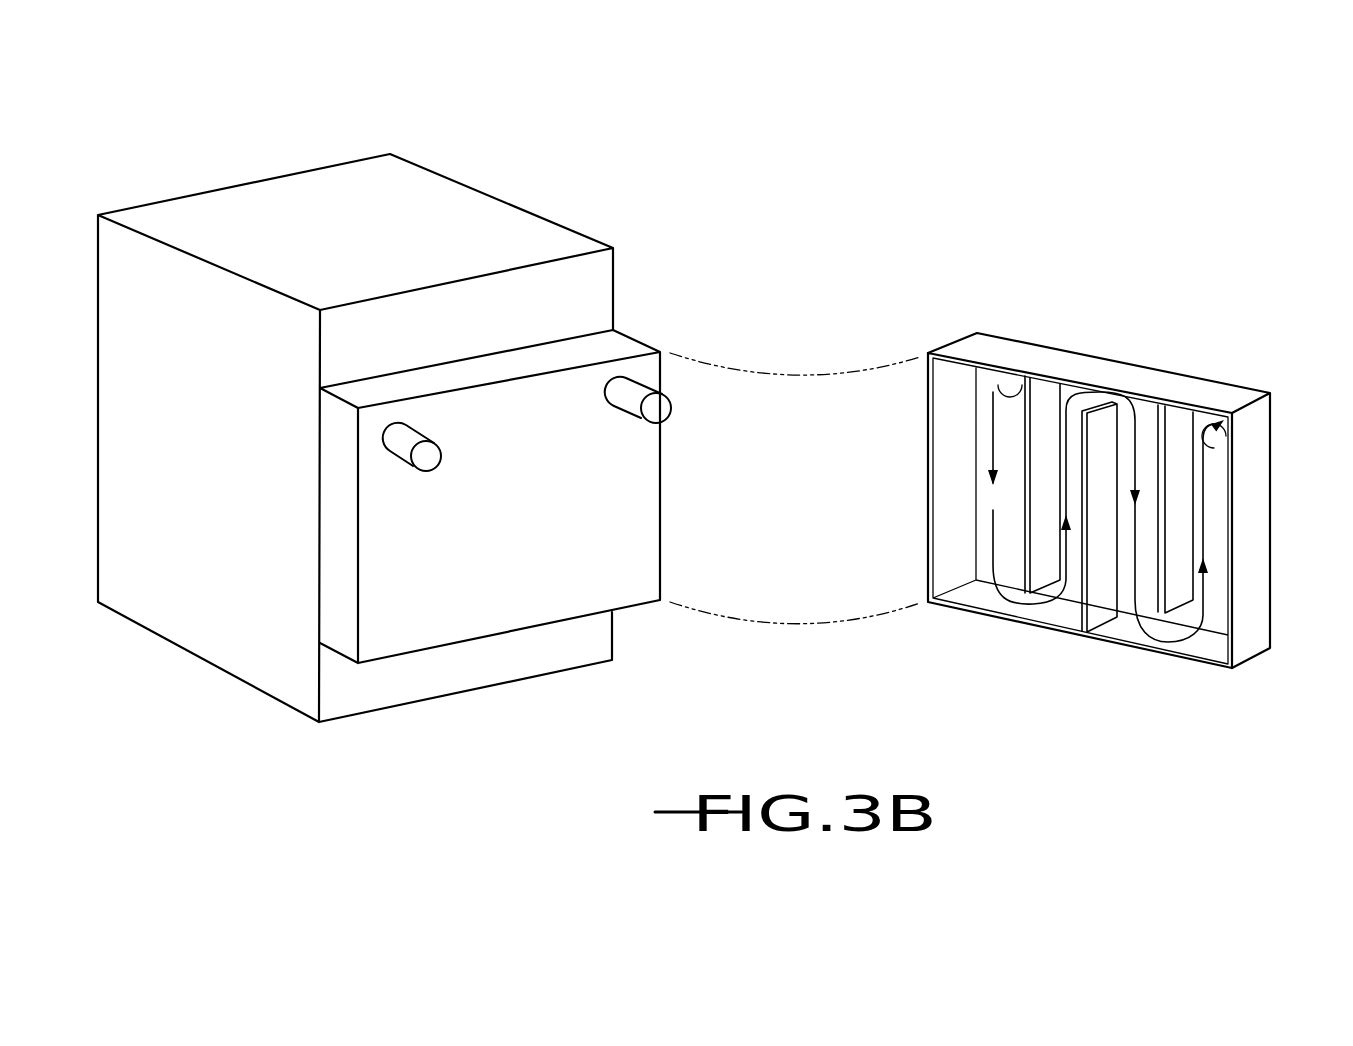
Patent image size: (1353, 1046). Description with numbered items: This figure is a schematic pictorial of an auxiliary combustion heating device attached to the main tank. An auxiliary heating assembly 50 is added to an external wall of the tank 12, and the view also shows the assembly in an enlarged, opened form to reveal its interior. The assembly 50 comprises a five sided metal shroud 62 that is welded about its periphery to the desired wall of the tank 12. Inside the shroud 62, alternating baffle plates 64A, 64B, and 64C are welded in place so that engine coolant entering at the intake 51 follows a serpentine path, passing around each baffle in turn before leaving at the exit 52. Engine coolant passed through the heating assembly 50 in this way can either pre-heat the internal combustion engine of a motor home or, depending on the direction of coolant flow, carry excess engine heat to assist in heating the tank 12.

The tank 12 is at (300, 188).
The auxiliary heating assembly 50 is at (344, 487).
The intake 51 is at (628, 407).
The exit 52 is at (402, 450).
The shroud 62 is at (506, 592).
The baffle plate 64A is at (1025, 497).
The baffle plate 64B is at (1100, 608).
The baffle plate 64C is at (1173, 423).